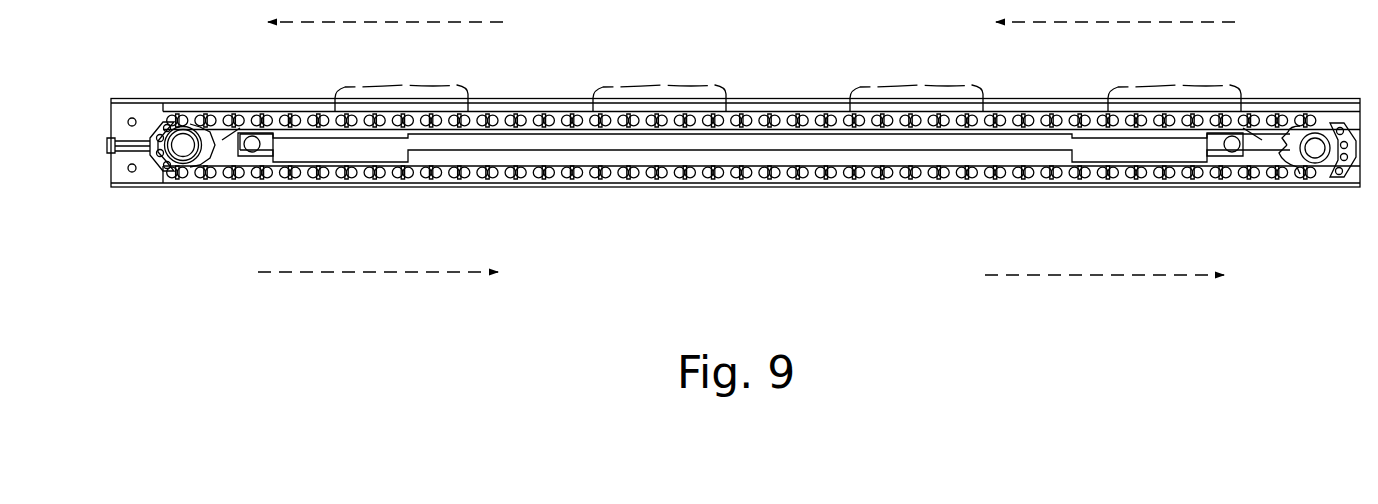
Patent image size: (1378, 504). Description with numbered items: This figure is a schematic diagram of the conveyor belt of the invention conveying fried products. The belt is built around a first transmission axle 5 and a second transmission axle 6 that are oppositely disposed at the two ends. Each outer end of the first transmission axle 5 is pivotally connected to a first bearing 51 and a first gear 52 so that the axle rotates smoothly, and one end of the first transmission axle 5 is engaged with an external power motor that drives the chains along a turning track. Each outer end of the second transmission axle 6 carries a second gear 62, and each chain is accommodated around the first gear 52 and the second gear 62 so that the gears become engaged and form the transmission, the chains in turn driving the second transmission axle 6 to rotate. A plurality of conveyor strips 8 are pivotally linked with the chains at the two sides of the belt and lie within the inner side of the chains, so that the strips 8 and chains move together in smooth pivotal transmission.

The first transmission axle 5 is at (1316, 140).
The first bearing 51 is at (1309, 128).
The first gear 52 is at (1282, 168).
The second transmission axle 6 is at (181, 142).
The second gear 62 is at (201, 127).
The conveyor strip 8 is at (275, 103).